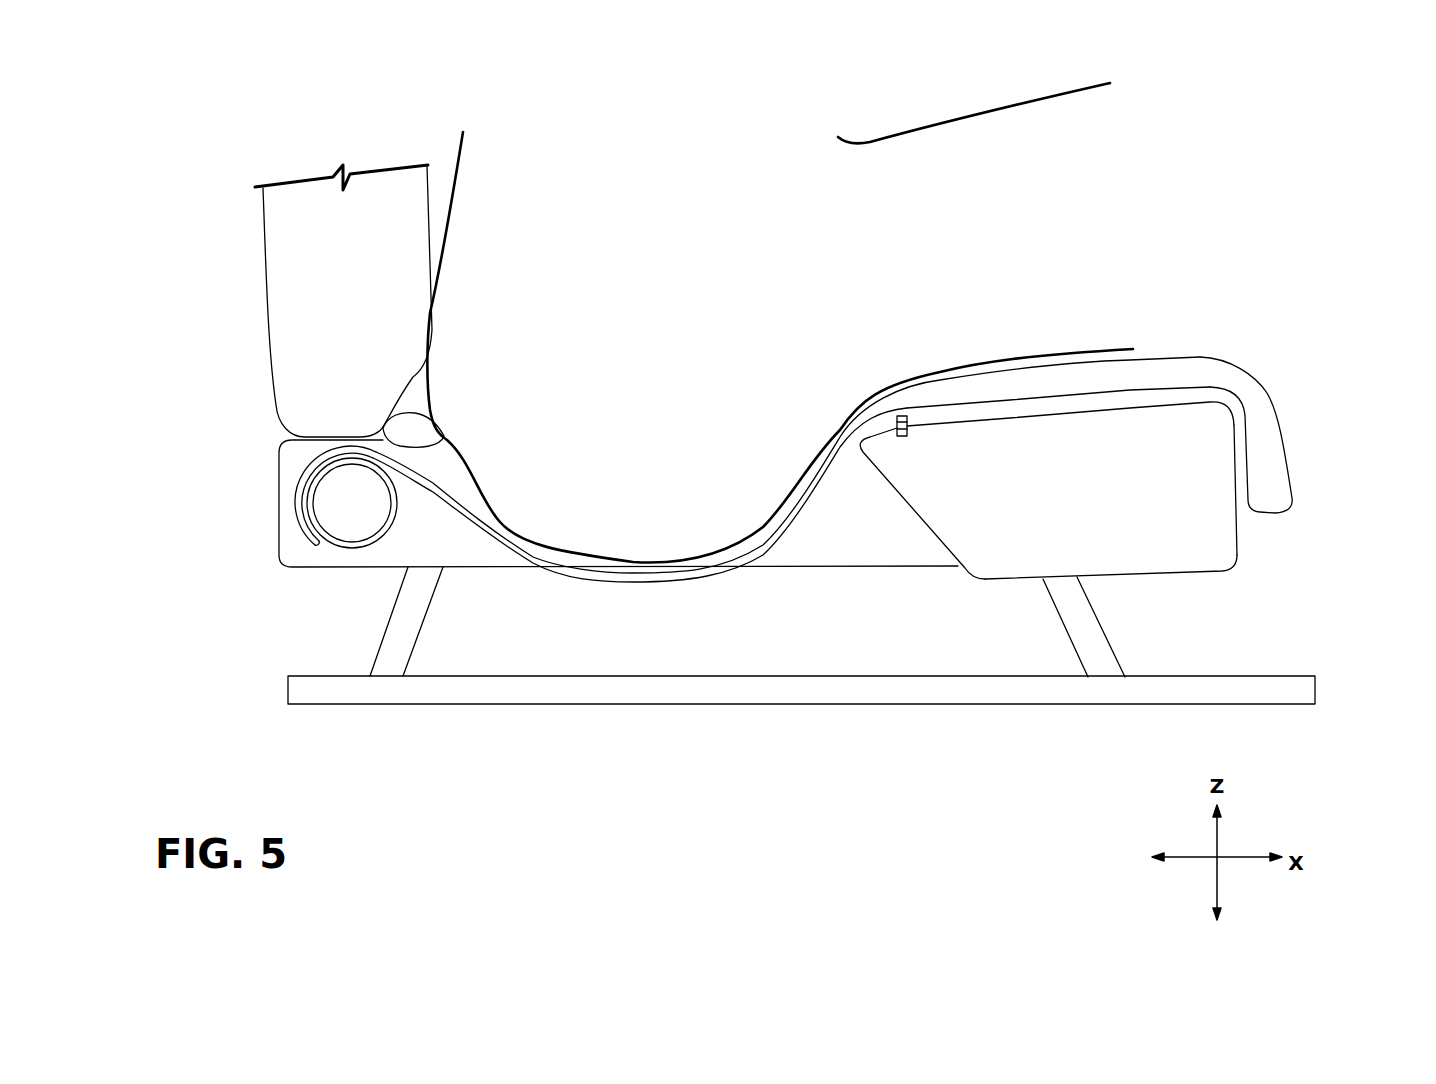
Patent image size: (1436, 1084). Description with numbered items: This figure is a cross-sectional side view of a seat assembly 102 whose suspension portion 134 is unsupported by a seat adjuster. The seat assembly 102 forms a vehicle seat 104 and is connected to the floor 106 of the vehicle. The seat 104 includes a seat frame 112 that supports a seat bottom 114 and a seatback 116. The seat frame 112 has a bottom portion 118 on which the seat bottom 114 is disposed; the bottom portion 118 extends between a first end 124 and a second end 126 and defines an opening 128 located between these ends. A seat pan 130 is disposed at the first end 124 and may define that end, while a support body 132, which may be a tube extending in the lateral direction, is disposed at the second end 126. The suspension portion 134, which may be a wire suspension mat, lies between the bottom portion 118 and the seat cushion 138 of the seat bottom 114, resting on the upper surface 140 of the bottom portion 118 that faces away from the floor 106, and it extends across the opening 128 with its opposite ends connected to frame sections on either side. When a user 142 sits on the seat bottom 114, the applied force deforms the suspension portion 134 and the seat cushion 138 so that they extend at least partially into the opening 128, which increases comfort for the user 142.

The seat assembly 102 is at (200, 160).
The seat 104 is at (308, 168).
The floor 106 is at (313, 674).
The seat frame 112 is at (1242, 525).
The seat bottom 114 is at (278, 478).
The seatback 116 is at (272, 373).
The bottom portion 118 is at (1237, 570).
The first end 124 is at (1195, 575).
The second end 126 is at (368, 555).
The opening 128 is at (820, 503).
The seat pan 130 is at (1160, 580).
The support body 132 is at (340, 548).
The suspension portion 134 is at (453, 510).
The seat cushion 138 is at (1284, 446).
The upper surface 140 is at (1148, 400).
The user 142 is at (613, 357).